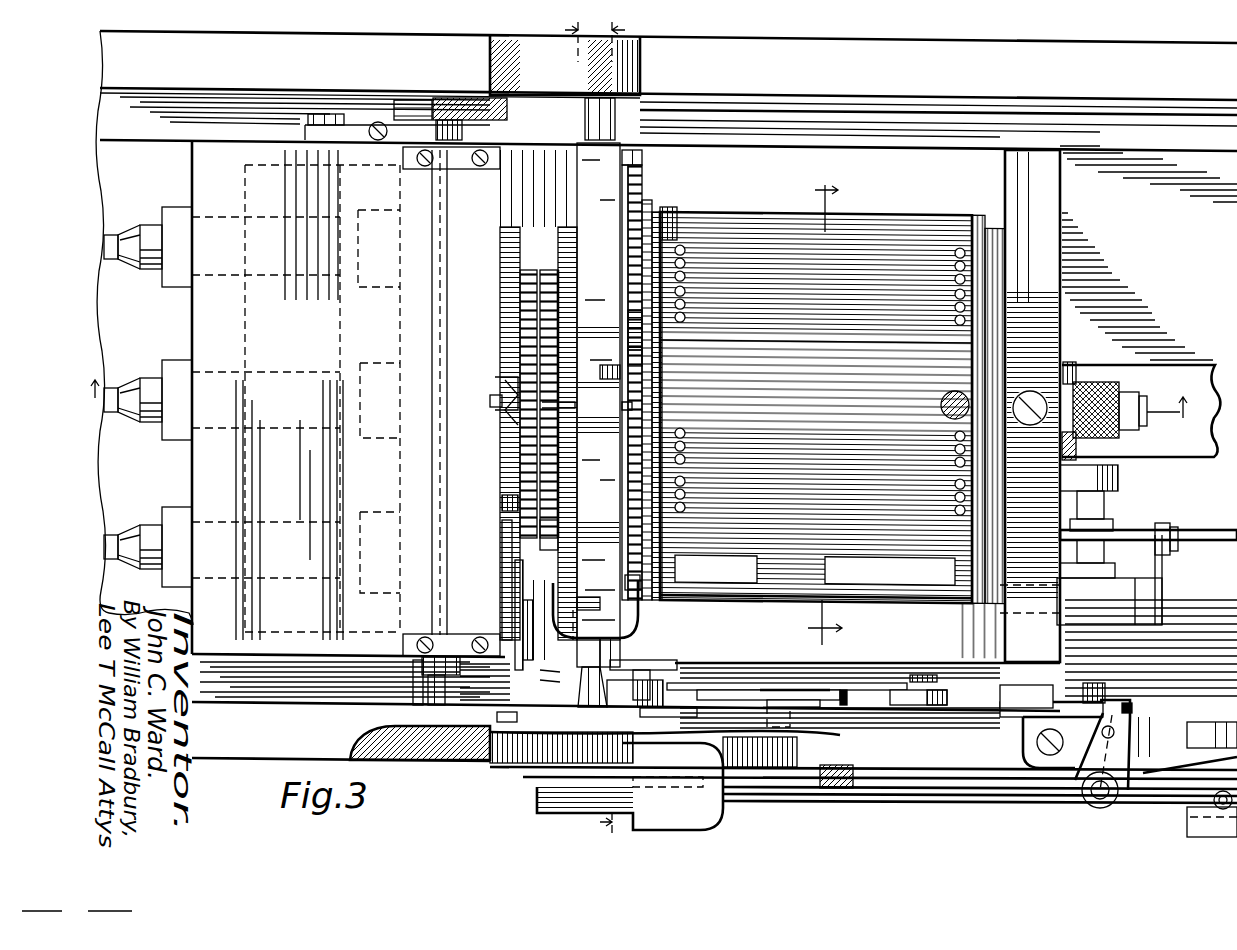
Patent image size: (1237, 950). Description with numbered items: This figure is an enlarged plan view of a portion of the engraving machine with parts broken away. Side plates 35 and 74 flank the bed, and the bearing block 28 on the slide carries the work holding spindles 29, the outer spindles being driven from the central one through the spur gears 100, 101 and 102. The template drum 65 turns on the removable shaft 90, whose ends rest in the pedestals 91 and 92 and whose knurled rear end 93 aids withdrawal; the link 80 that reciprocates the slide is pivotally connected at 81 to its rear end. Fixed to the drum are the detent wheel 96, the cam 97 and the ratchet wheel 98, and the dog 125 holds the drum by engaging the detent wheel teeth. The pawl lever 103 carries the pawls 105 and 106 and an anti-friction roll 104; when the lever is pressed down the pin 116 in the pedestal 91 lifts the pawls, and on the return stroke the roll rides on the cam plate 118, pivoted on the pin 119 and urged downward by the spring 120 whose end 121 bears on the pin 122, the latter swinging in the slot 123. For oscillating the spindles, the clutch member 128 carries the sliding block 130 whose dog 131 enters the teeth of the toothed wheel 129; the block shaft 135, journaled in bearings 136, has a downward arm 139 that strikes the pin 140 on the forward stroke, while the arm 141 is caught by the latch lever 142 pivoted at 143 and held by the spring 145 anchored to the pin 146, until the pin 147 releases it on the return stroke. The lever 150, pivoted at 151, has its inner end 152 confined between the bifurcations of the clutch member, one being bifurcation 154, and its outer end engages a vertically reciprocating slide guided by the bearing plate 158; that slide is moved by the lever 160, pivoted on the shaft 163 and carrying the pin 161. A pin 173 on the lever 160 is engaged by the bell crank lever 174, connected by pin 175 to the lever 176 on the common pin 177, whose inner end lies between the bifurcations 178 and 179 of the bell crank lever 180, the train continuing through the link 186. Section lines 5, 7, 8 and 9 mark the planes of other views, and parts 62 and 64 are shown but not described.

The side plate 35 is at (666, 397).
The side plate 74 is at (863, 86).
The latch lever 142 is at (245, 129).
The pivot 143 is at (326, 118).
The pin 146 is at (378, 122).
The tension spring 145 is at (413, 94).
The arm 141 is at (440, 130).
The pin 147 is at (605, 120).
The bearings 136 is at (430, 168).
The toothed wheel 129 is at (528, 270).
The dog 125 is at (668, 225).
The template drum 65 is at (878, 226).
The pedestal 92 is at (1118, 404).
The work holding spindles 29 is at (215, 290).
The spur gear 100 is at (402, 310).
The clutch member 128 is at (500, 382).
The block 130 is at (492, 392).
The bearing block 28 is at (192, 337).
The spur gear 101 is at (376, 418).
The block shaft 135 is at (440, 500).
The dog 131 is at (510, 445).
The inner end of lever 152 is at (485, 509).
The lever 150 is at (500, 565).
The arm 139 is at (445, 655).
The spur gear 102 is at (390, 595).
The pin 140 is at (415, 690).
The pawl 105 is at (628, 462).
The pawl 106 is at (545, 492).
The pedestal 91 is at (618, 400).
The bifurcation 154 is at (525, 528).
The cam 97 is at (648, 332).
The detent wheel 96 is at (642, 357).
The ratchet wheel 98 is at (625, 372).
The drum surface 64 is at (870, 448).
The pin 62 is at (948, 395).
The removable shaft 90 is at (1072, 385).
The pivotal connection 81 is at (1110, 383).
The link 80 is at (1141, 411).
The knurled end 93 is at (1105, 443).
The pin 116 is at (630, 600).
The pawl lever 103 is at (610, 625).
The spring end 121 is at (705, 690).
The cam plate 118 is at (740, 685).
The spring 120 is at (828, 627).
The link 186 is at (822, 690).
The pin 119 is at (838, 700).
The bifurcation 178 is at (1083, 700).
The bifurcation 179 is at (1130, 705).
The pin 175 is at (1140, 715).
The bell crank lever 180 is at (1050, 702).
The slot 123 is at (855, 727).
The pivot 151 is at (545, 660).
The anti-friction roll 104 is at (585, 700).
The pin 161 is at (637, 797).
The bearing plate 158 is at (540, 805).
The pin 122 is at (780, 775).
The lever 160 is at (905, 800).
The lever 176 is at (1025, 760).
The pin 177 is at (1095, 790).
The shaft 163 is at (1236, 765).
The pin 173 is at (1185, 823).
The bell crank lever 174 is at (1145, 775).
The section line 5 is at (641, 388).
The section line 7 is at (613, 429).
The section line 8 is at (520, 722).
The section line 9 is at (821, 419).